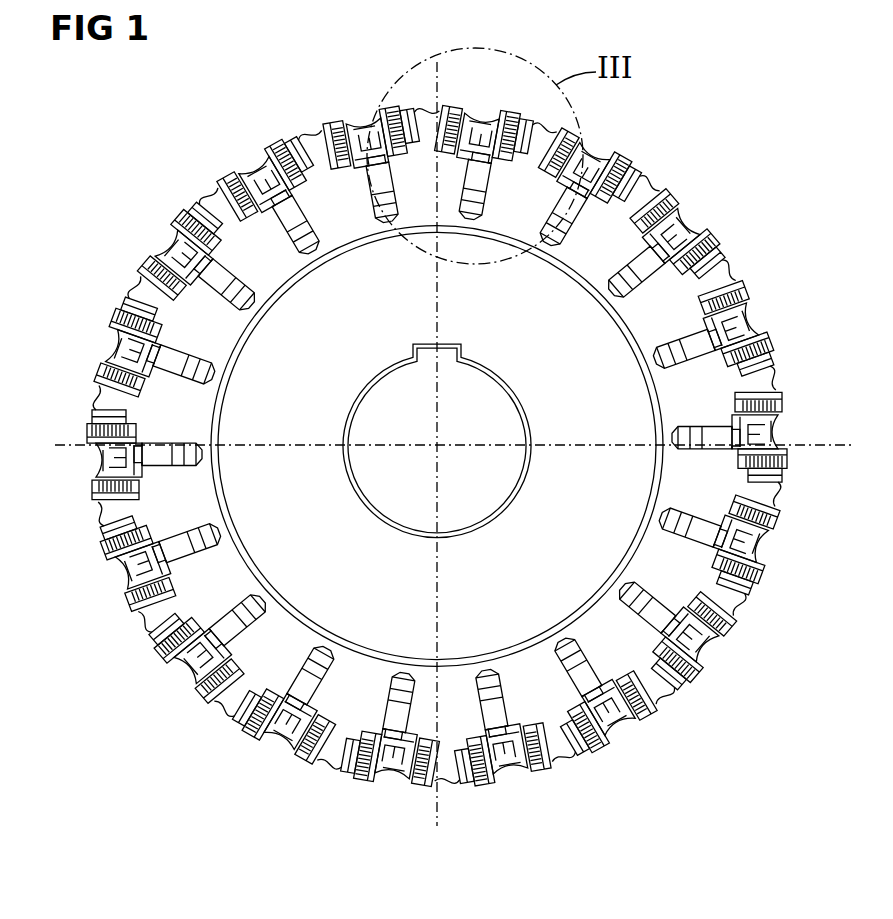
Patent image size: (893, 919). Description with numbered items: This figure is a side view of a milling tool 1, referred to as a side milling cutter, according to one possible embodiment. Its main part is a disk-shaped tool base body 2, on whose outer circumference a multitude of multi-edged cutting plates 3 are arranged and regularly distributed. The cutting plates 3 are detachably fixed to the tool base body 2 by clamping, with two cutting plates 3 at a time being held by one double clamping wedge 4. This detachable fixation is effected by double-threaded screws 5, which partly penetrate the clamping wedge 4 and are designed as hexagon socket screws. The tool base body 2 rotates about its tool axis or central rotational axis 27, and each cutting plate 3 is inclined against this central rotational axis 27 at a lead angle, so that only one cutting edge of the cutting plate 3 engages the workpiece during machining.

The milling tool 1 is at (181, 161).
The tool base body 2 is at (597, 240).
The cutting plate 3 is at (635, 196).
The double clamping wedge 4 is at (683, 223).
The double-threaded screw 5 is at (648, 282).
The central rotational axis 27 is at (440, 446).